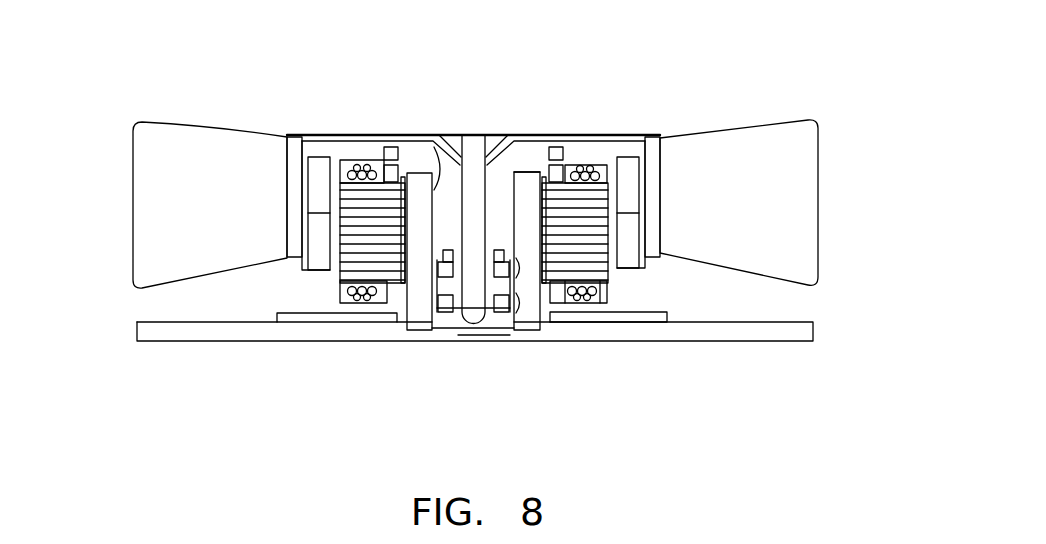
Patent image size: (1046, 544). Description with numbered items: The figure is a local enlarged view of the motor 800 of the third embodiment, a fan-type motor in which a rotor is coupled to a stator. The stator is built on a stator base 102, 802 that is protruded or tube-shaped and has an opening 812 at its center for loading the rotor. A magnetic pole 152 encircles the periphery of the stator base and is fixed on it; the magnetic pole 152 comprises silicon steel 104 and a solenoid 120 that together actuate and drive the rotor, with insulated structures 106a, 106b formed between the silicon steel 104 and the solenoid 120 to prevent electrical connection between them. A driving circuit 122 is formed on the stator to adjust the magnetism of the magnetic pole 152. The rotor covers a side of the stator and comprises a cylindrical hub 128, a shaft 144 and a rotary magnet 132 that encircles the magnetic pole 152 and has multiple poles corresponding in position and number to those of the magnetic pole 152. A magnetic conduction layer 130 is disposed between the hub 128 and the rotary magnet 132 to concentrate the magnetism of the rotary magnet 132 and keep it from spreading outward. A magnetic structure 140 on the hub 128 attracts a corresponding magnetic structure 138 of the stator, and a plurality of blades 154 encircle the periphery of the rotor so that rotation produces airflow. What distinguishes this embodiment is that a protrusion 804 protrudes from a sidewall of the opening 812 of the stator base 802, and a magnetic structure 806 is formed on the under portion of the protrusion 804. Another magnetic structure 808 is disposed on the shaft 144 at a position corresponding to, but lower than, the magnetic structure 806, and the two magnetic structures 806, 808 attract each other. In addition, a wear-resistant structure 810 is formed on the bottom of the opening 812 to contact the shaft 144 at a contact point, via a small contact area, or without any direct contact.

The motor 800 is at (118, 37).
The stator base 102 is at (180, 333).
The silicon steel 104 is at (397, 283).
The insulated structure 106a is at (340, 182).
The insulated structure 106b is at (340, 302).
The solenoid 120 is at (358, 297).
The driving circuit 122 is at (287, 322).
The hub 128 is at (590, 140).
The magnetic conduction layer 130 is at (643, 140).
The rotary magnet 132 is at (633, 185).
The magnetic structure 138 is at (378, 168).
The magnetic structure 140 is at (380, 153).
The shaft 144 is at (475, 140).
The magnetic pole 152 is at (425, 403).
The blades 154 is at (728, 147).
The stator base 802 is at (527, 171).
The protrusion 804 is at (441, 255).
The magnetic structure 806 is at (520, 268).
The magnetic structure 808 is at (520, 303).
The wear-resistant structure 810 is at (510, 290).
The opening 812 is at (436, 148).